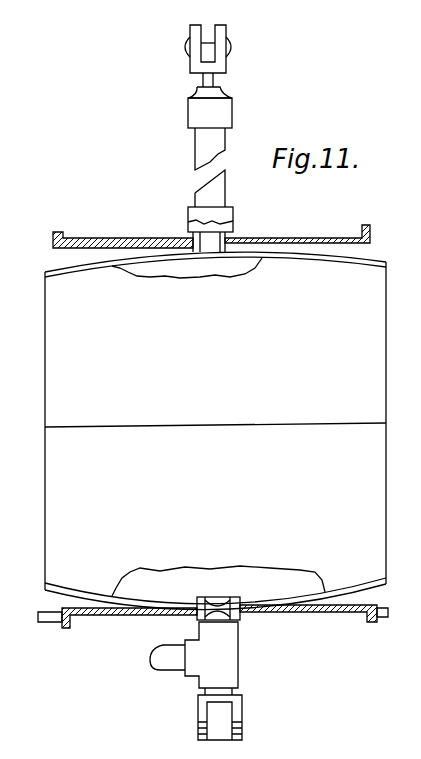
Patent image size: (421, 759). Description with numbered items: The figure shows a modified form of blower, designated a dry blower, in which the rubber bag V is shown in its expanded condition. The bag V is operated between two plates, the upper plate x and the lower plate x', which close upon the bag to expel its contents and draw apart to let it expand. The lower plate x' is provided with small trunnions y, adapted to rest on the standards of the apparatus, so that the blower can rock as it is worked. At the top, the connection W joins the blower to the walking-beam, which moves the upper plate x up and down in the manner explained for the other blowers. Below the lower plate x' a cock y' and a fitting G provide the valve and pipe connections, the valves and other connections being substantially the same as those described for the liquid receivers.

The rubber bag V is at (215, 431).
The connection to walking-beam W is at (227, 60).
The upper plate x is at (230, 229).
The lower plate x' is at (171, 619).
The trunnion y is at (218, 623).
The cock y' is at (189, 659).
The connection fitting G is at (220, 717).